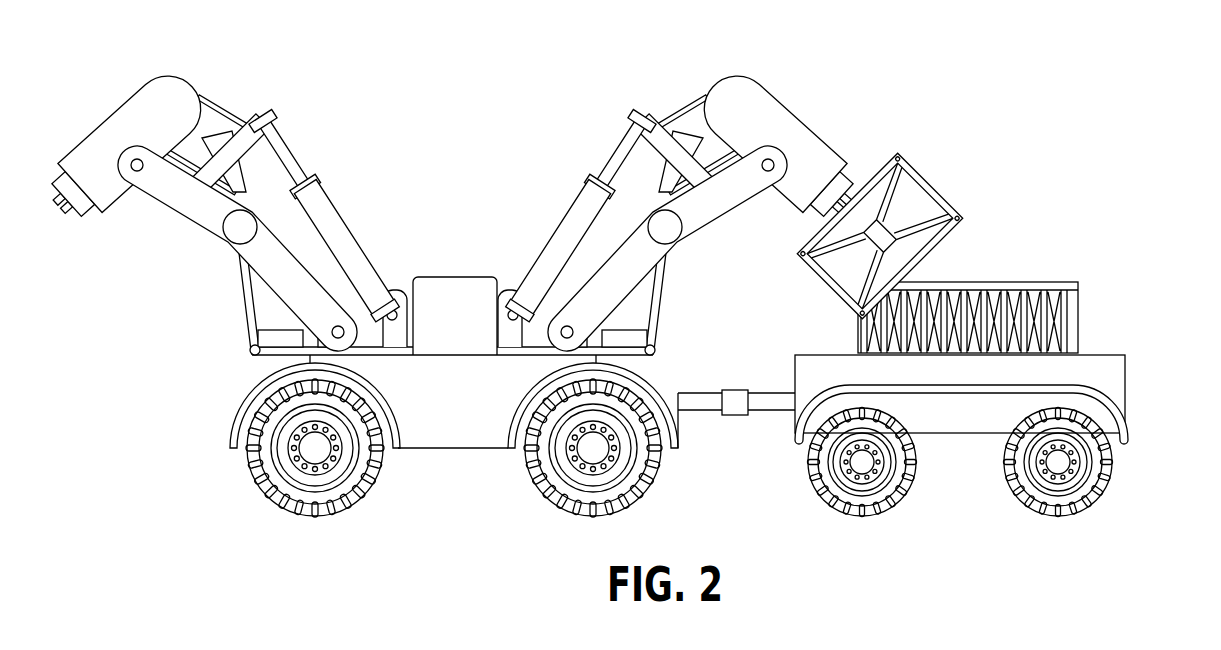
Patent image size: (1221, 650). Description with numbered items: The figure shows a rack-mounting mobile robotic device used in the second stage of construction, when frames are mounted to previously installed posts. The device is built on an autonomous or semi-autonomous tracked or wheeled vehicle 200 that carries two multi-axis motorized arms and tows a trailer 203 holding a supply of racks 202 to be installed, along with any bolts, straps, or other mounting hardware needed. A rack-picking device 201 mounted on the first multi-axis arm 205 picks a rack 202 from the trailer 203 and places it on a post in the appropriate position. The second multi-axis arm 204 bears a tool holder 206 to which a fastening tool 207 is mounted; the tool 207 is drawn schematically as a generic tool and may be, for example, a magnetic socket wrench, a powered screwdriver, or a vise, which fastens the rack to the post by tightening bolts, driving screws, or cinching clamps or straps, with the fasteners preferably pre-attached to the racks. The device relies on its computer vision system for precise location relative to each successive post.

The wheeled vehicle 200 is at (447, 276).
The rack-picking device 201 is at (797, 128).
The rack 202 is at (964, 221).
The trailer 203 is at (1128, 426).
The second multi-axis arm 204 is at (243, 170).
The first multi-axis arm 205 is at (680, 132).
The tool holder 206 is at (135, 94).
The fastening tool 207 is at (66, 216).